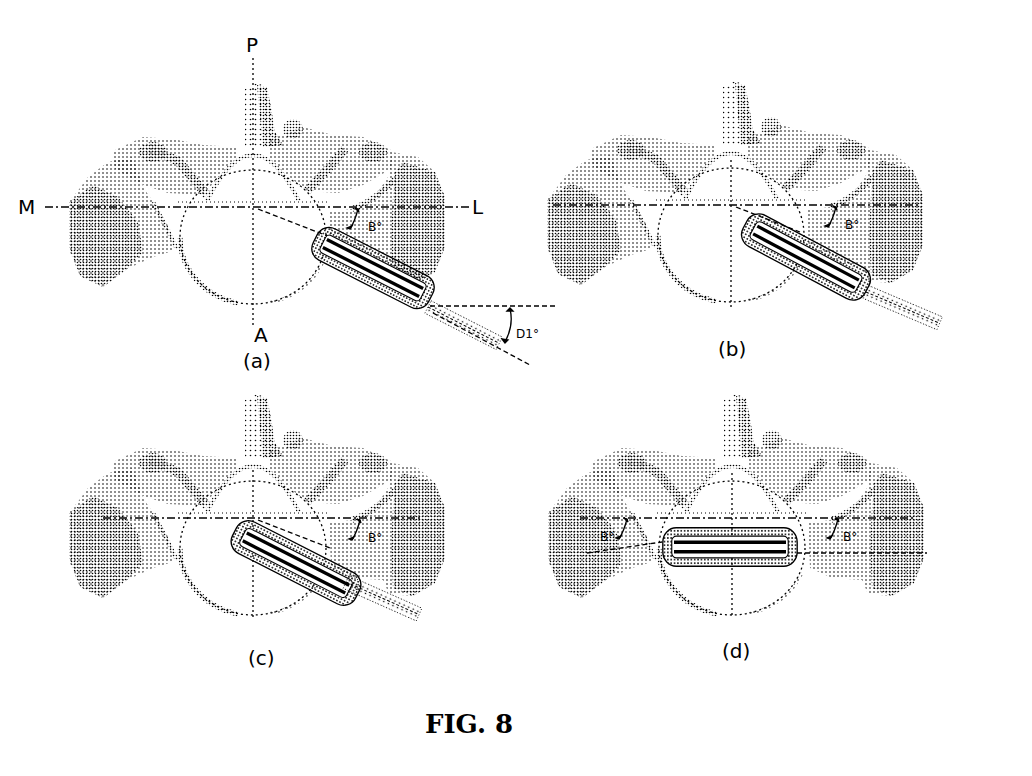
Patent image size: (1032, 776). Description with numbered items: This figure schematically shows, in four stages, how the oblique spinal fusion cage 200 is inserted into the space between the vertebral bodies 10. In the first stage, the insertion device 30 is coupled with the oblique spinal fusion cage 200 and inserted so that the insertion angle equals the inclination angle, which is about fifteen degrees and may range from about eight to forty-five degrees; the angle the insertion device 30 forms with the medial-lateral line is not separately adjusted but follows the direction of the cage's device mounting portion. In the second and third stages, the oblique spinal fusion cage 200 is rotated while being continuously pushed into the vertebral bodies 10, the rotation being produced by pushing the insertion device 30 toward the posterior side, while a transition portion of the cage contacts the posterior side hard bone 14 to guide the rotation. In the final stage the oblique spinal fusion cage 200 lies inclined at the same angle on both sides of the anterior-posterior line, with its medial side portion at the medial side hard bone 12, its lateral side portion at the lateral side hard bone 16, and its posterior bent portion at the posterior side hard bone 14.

The vertebral bodies 10 is at (242, 275).
The medial side hard bone 12 is at (190, 227).
The posterior side hard bone 14 is at (243, 205).
The lateral side hard bone 16 is at (322, 232).
The oblique spinal fusion cage 200 is at (375, 297).
The insertion device 30 is at (448, 327).